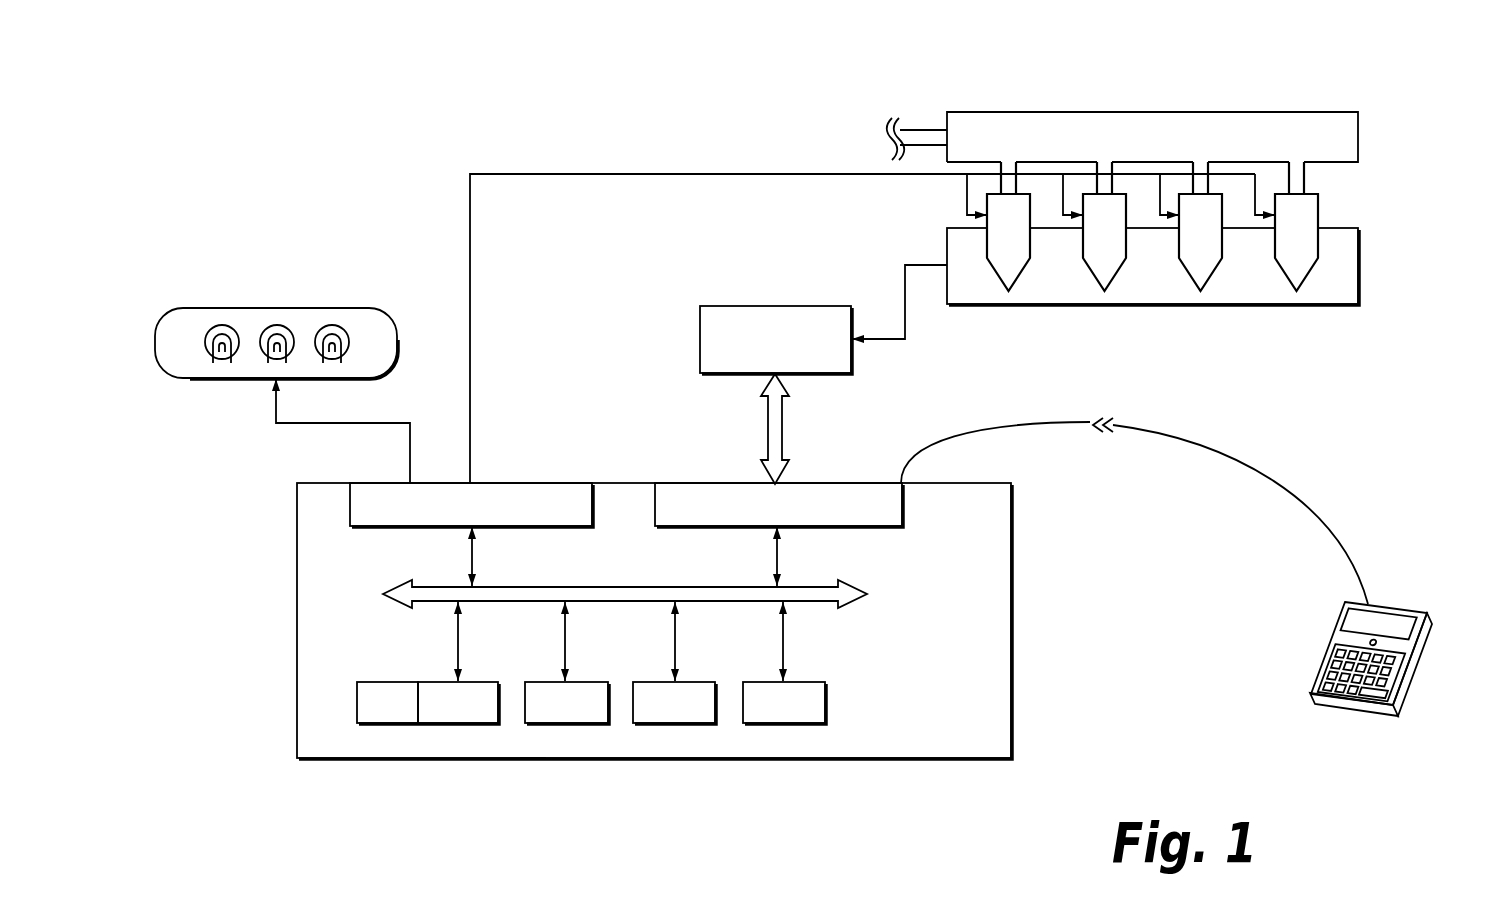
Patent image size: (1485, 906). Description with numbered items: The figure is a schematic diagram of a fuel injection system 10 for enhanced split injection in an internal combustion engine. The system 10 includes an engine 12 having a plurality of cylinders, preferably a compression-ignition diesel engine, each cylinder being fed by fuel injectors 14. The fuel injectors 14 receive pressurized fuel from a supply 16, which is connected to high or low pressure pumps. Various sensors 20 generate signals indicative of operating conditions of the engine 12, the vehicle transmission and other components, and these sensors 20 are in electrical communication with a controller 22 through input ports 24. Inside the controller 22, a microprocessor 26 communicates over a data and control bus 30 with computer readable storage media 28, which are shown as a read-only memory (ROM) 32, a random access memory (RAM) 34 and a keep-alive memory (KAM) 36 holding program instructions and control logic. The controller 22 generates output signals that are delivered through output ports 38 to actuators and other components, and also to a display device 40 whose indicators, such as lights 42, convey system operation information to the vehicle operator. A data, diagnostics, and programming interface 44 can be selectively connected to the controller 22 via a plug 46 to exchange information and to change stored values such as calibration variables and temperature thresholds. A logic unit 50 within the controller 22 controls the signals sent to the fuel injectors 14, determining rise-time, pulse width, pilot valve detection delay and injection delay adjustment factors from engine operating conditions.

The system 10 is at (762, 104).
The engine 12 is at (1222, 304).
The fuel injectors 14 is at (1318, 213).
The supply 16 is at (1358, 137).
The sensors 20 is at (700, 333).
The controller 22 is at (1012, 617).
The input ports 24 is at (873, 527).
The microprocessor 26 is at (447, 682).
The computer readable storage media 28 is at (533, 759).
The data and control bus 30 is at (633, 587).
The read-only memory (ROM) 32 is at (690, 682).
The random access memory (RAM) 34 is at (828, 697).
The keep-alive memory (KAM) 36 is at (582, 682).
The output ports 38 is at (377, 530).
The display device 40 is at (237, 380).
The lights 42 is at (283, 308).
The data, diagnostics, and programming interface 44 is at (1415, 673).
The plug 46 is at (1103, 447).
The logic unit 50 is at (383, 682).